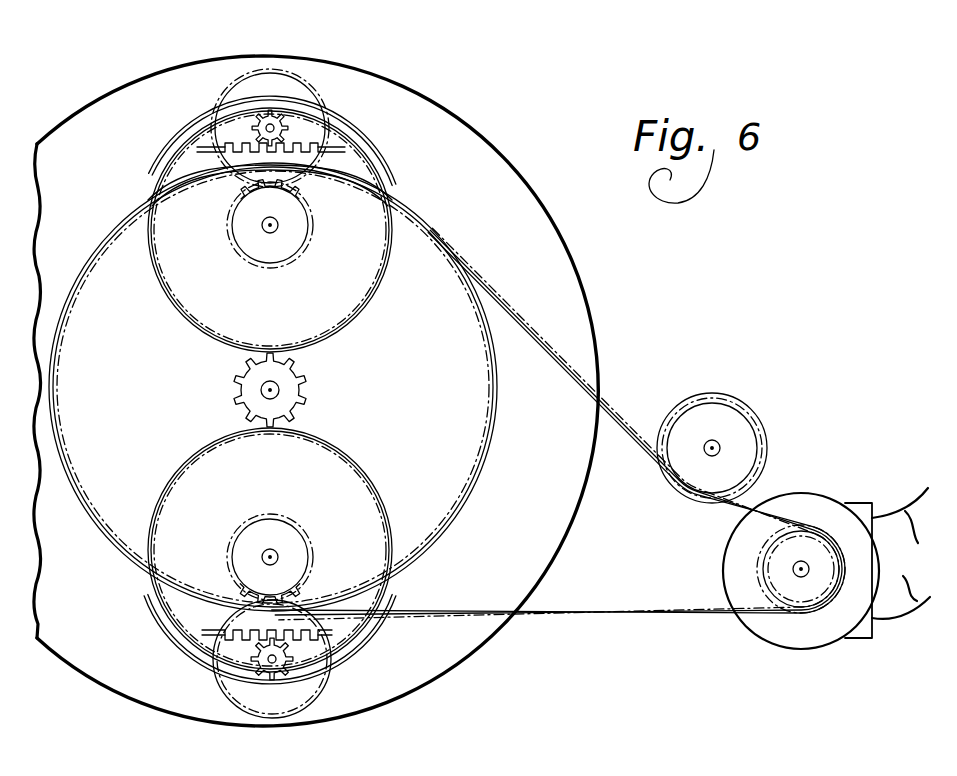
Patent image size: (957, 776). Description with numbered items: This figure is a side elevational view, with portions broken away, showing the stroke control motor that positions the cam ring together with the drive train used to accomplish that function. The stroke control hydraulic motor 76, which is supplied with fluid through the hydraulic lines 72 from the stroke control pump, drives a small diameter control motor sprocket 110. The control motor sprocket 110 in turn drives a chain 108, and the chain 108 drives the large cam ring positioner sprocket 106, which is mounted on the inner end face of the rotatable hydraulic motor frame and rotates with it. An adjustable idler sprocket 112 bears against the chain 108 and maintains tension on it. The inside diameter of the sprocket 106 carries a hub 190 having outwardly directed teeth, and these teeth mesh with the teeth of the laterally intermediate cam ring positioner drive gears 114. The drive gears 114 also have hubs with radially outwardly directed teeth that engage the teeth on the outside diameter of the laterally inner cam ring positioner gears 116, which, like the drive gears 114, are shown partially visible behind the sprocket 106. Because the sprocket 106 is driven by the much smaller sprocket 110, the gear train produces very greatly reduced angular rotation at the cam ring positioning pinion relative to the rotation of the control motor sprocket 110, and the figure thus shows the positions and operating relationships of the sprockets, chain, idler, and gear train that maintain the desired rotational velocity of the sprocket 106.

The hydraulic lines 72 is at (887, 563).
The stroke control hydraulic motor 76 is at (820, 494).
The cam ring positioner sprocket 106 is at (404, 200).
The chain 108 is at (537, 336).
The control motor sprocket 110 is at (807, 527).
The adjustable idler sprocket 112 is at (722, 392).
The cam ring positioner drive gears 114 is at (346, 128).
The cam ring positioner gears 116 is at (291, 73).
The hub 190 is at (312, 394).